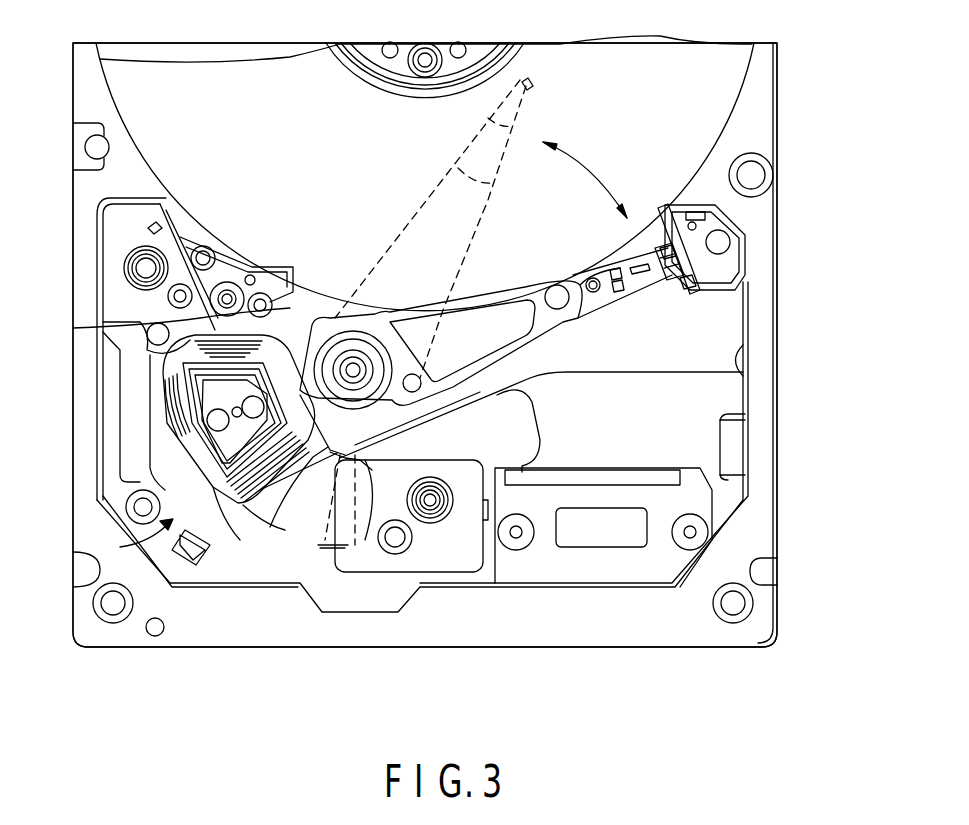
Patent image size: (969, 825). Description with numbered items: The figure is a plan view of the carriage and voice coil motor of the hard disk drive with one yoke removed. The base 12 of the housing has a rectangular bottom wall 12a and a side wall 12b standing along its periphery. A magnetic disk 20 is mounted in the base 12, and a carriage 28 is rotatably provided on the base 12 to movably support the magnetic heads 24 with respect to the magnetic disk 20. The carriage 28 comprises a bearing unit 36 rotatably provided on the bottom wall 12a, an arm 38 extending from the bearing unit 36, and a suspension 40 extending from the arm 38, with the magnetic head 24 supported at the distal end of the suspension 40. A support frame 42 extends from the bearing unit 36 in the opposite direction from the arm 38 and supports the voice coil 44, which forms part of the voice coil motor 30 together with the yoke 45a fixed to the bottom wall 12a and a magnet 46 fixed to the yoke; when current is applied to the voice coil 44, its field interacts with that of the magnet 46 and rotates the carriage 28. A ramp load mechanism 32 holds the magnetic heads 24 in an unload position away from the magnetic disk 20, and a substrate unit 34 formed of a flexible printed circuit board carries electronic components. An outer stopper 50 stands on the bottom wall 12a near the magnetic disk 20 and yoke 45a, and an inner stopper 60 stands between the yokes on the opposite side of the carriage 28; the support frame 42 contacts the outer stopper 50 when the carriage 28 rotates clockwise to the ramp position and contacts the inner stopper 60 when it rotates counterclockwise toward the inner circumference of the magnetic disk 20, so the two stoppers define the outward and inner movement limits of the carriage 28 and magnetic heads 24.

The base 12 is at (824, 400).
The bottom wall 12a is at (740, 410).
The side wall 12b is at (763, 452).
The magnetic disk 20 is at (219, 70).
The magnetic head 24 is at (667, 272).
The carriage 28 is at (494, 428).
The voice coil motor 30 is at (120, 547).
The ramp load mechanism 32 is at (748, 287).
The substrate unit 34 is at (628, 562).
The bearing unit 36 is at (333, 322).
The arm 38 is at (515, 328).
The suspension 40 is at (620, 280).
The support frame 42 is at (150, 325).
The voice coil 44 is at (190, 455).
The yoke 45a is at (462, 562).
The magnet 46 is at (358, 530).
The outer stopper 50 is at (230, 277).
The inner stopper 60 is at (395, 548).